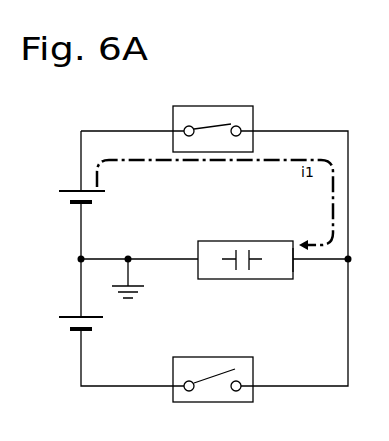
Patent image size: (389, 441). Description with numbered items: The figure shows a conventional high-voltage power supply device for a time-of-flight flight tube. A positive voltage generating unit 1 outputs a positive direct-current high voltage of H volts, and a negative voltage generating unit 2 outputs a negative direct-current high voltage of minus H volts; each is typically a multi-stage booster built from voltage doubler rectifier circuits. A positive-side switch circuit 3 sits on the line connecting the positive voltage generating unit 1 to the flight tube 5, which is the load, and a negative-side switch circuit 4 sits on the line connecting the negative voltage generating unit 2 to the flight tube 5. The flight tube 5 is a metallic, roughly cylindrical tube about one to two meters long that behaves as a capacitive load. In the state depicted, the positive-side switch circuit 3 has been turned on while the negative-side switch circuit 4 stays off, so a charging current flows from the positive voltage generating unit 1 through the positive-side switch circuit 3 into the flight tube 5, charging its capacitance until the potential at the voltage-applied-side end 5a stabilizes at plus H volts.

The positive voltage generating unit 1 is at (68, 200).
The negative voltage generating unit 2 is at (66, 317).
The positive-side switch circuit 3 is at (218, 106).
The negative-side switch circuit 4 is at (226, 357).
The flight tube 5 is at (254, 241).
The voltage-applied-side end 5a is at (293, 262).